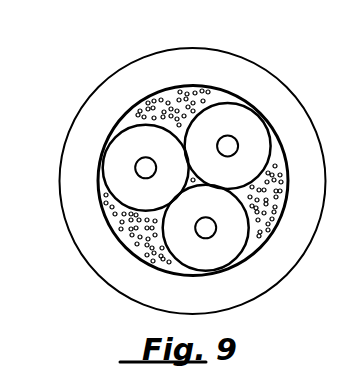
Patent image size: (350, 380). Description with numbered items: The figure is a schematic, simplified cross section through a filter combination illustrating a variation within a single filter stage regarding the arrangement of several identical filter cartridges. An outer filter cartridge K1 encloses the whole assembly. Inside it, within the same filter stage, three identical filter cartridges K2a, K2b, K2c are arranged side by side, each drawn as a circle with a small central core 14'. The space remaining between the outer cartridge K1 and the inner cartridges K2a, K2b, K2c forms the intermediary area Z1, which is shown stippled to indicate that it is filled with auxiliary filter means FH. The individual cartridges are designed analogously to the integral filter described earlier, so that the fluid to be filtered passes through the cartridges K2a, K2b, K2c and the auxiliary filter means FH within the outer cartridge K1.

The filter cartridge 1 K1 is at (199, 57).
The intermediary area Z1 is at (210, 90).
The auxiliary filter means FH is at (159, 98).
The cartridge 2a K2a is at (115, 168).
The cartridge 2b K2b is at (253, 125).
The cartridge 2c K2c is at (188, 259).
The conductor core 14' is at (168, 174).